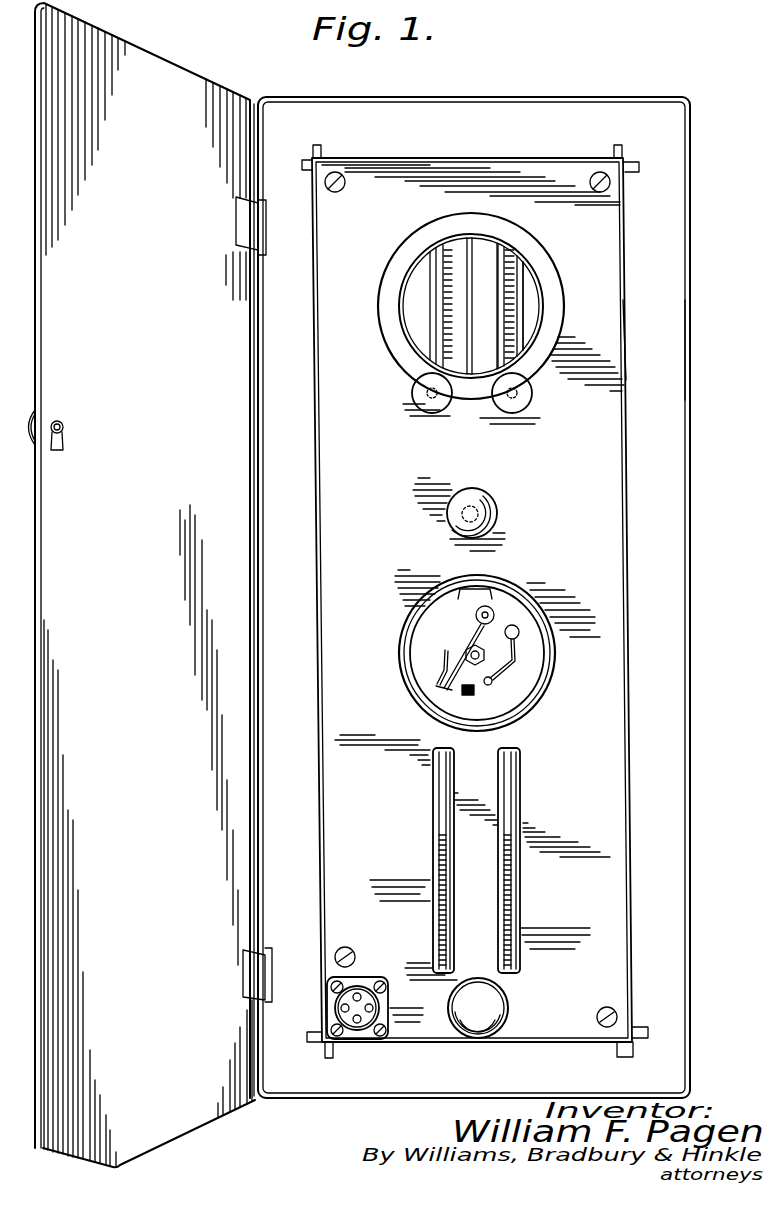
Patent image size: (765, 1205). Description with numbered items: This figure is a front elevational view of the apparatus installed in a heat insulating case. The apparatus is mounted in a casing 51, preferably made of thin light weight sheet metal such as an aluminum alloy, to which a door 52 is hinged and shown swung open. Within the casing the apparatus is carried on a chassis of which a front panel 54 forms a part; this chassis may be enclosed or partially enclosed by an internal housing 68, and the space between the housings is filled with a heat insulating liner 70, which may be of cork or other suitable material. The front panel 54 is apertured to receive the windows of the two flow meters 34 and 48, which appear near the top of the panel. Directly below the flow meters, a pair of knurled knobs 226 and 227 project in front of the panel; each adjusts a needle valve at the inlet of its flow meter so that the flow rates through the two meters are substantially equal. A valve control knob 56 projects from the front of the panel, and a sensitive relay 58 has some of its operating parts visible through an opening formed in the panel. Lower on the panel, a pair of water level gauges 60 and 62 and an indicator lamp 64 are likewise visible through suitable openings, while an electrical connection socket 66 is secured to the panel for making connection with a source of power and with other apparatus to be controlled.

The flow meter 34 is at (420, 263).
The flow meter 48 is at (517, 300).
The casing 51 is at (506, 98).
The door 52 is at (183, 88).
The front panel 54 is at (602, 251).
The valve control knob 56 is at (475, 497).
The sensitive relay 58 is at (508, 607).
The water level gauge 60 is at (440, 800).
The water level gauge 62 is at (508, 805).
The indicator lamp 64 is at (487, 1000).
The electrical connection socket 66 is at (367, 985).
The internal housing 68 is at (627, 340).
The heat insulating liner 70 is at (658, 381).
The knurled knob 226 is at (426, 407).
The adjusting knob 227 is at (522, 397).